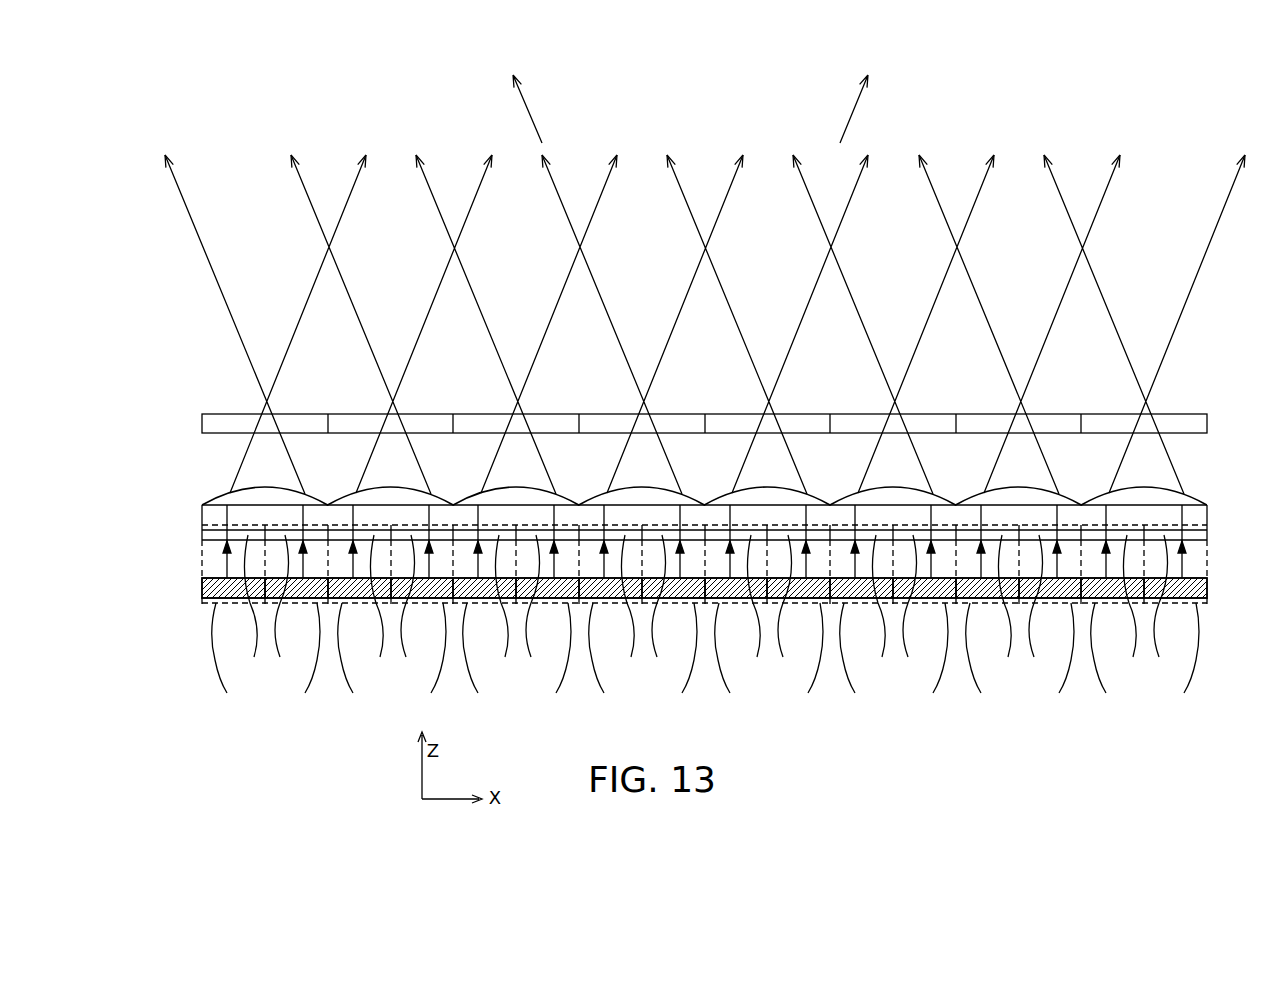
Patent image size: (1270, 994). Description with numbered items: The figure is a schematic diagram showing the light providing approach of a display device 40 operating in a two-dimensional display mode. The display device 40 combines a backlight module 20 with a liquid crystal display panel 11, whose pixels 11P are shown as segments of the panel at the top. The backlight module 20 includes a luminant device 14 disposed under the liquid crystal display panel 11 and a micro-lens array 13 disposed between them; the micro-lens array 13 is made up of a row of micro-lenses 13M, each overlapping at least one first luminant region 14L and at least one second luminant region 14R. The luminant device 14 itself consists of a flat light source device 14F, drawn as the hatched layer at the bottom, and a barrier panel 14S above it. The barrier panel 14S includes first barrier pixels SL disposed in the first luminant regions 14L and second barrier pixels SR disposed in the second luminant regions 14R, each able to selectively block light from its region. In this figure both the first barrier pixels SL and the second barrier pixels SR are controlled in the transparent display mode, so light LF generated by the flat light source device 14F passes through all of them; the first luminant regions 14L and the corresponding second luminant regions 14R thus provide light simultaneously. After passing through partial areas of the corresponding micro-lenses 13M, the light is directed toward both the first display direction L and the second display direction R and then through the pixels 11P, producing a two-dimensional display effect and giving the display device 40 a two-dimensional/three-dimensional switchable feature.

The display device 40 is at (192, 115).
The liquid crystal display panel 11 is at (188, 417).
The pixels 11P is at (1182, 418).
The backlight module 20 is at (110, 603).
The micro-lens array 13 is at (190, 483).
The micro-lenses 13M is at (1141, 502).
The luminant device 14 is at (143, 522).
The barrier panel 14S is at (188, 526).
The flat light source device 14F is at (190, 577).
The first luminant regions 14L is at (1116, 628).
The second luminant regions 14R is at (1178, 628).
The first barrier pixels SL is at (679, 596).
The second barrier pixels SR is at (727, 596).
The light LF is at (705, 662).
The second display direction R is at (522, 109).
The first display direction L is at (859, 109).